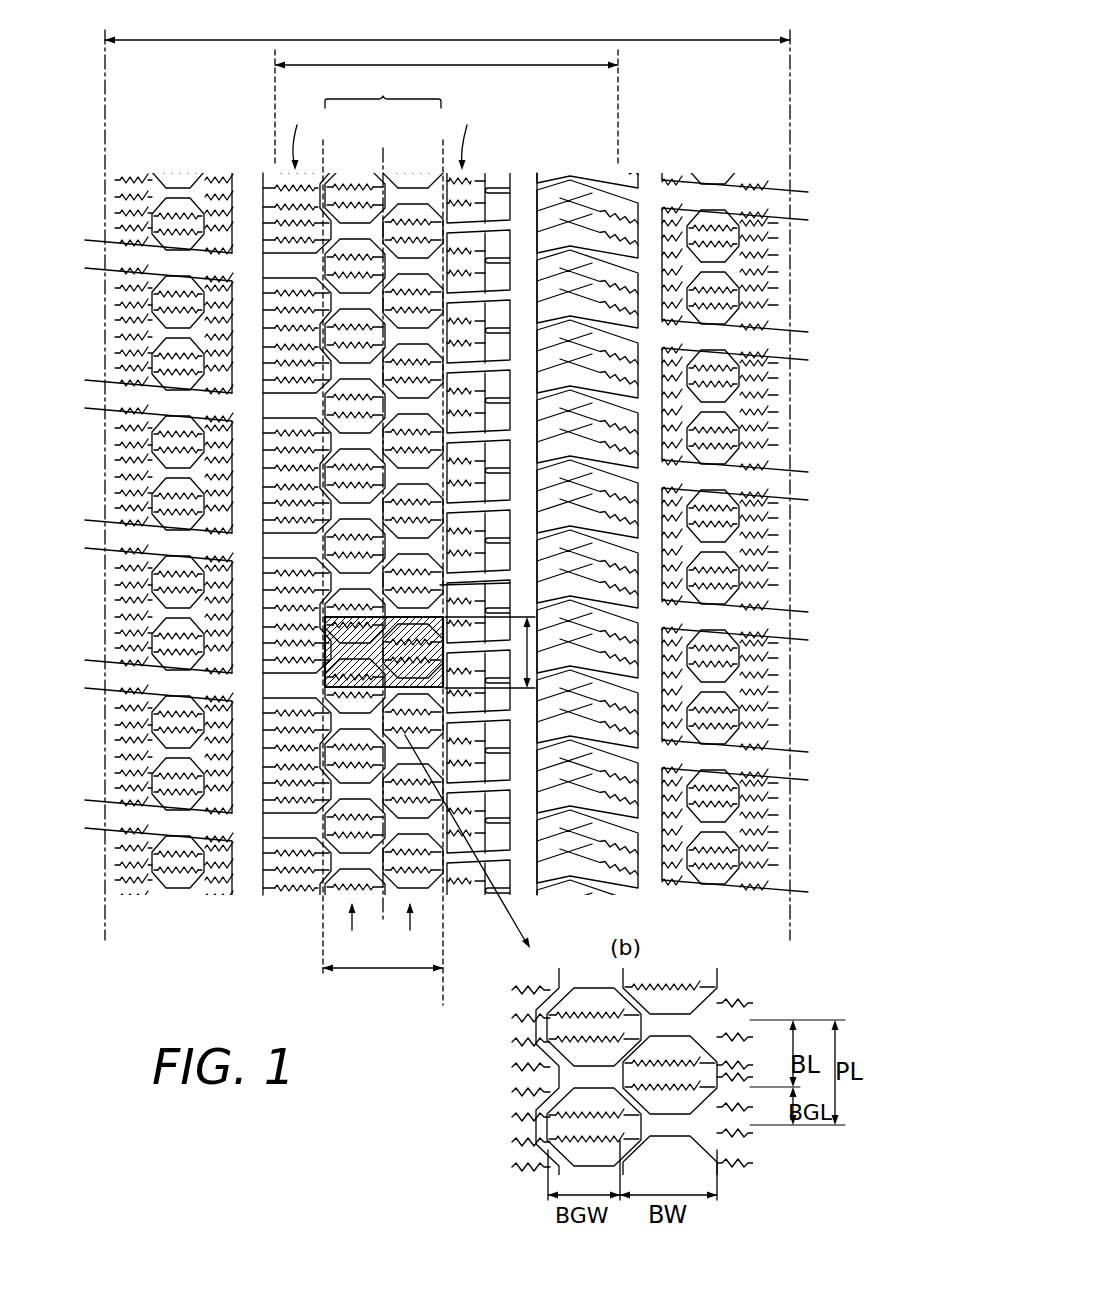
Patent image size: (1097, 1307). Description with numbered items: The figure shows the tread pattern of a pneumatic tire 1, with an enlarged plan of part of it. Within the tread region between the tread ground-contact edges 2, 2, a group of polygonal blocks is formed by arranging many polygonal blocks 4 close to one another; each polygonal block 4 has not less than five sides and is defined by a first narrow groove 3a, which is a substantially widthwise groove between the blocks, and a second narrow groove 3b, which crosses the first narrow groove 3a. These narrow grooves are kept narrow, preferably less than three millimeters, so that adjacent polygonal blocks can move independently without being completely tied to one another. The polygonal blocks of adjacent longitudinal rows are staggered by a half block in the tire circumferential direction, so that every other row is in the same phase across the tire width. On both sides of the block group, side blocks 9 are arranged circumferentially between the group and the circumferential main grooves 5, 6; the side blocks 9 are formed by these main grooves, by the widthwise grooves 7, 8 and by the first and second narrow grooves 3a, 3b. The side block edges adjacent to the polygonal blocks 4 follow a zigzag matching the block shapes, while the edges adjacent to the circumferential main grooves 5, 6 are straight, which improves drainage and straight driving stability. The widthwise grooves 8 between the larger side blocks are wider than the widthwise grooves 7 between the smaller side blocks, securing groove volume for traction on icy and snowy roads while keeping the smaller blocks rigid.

The tire 1 is at (683, 137).
The tread ground-contact edge 2 is at (105, 112).
The first narrow groove 3a is at (350, 297).
The second narrow groove 3b is at (305, 400).
The polygonal block 4 is at (330, 337).
The circumferential main groove 5 is at (531, 195).
The circumferential main groove 6 is at (250, 190).
The widthwise groove 7 is at (440, 506).
The widthwise groove 8 is at (290, 555).
The side block 9 is at (290, 770).